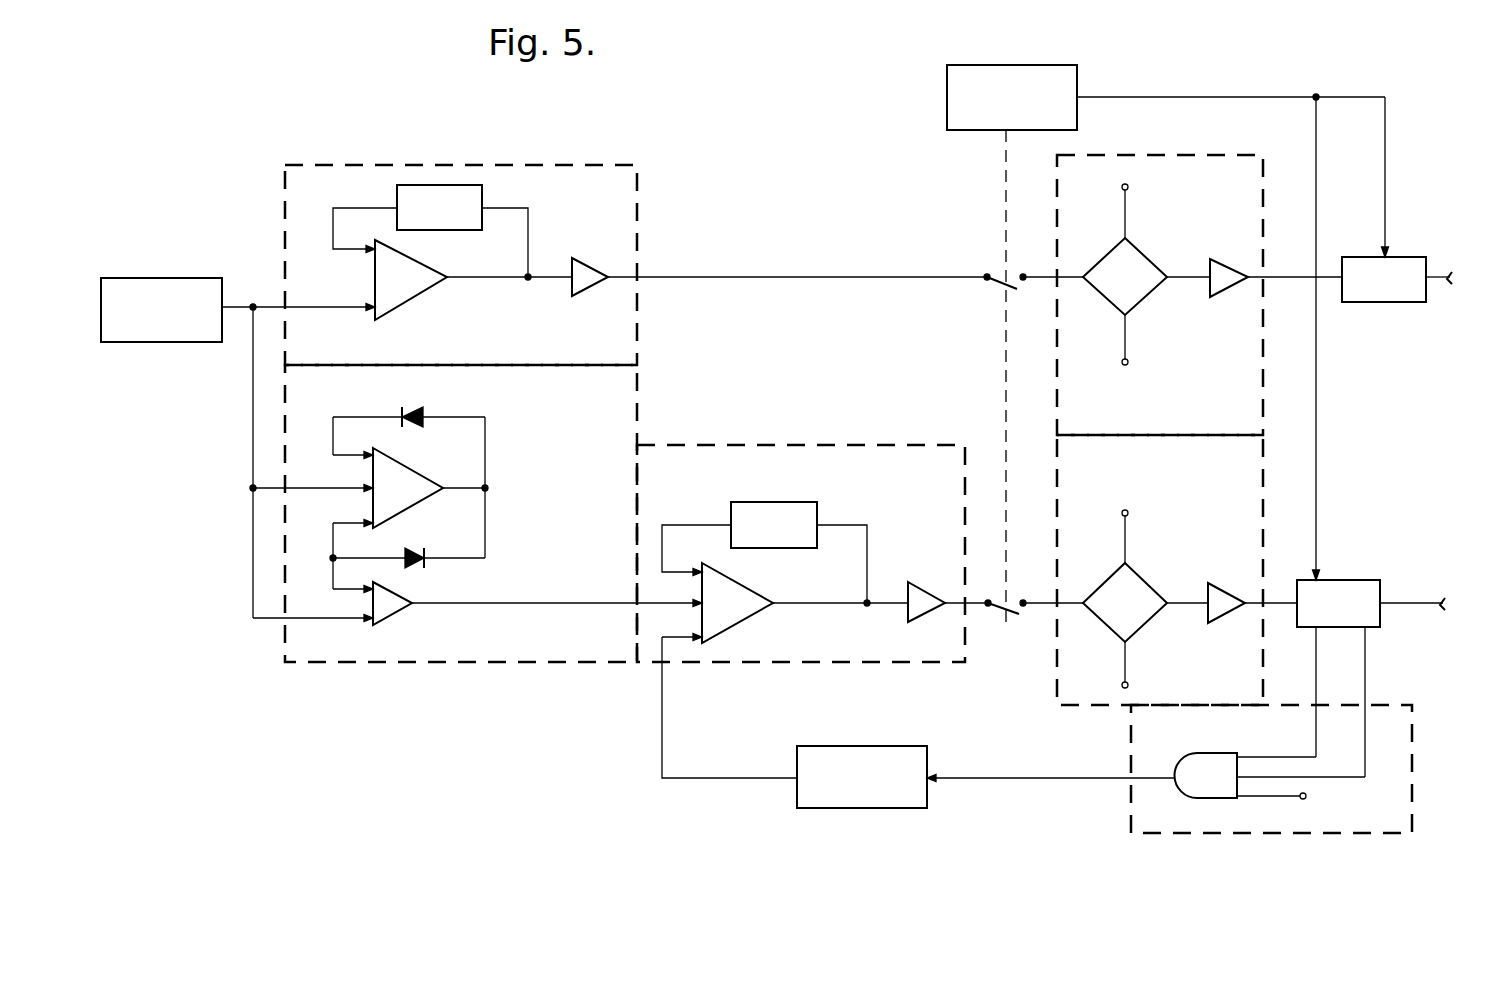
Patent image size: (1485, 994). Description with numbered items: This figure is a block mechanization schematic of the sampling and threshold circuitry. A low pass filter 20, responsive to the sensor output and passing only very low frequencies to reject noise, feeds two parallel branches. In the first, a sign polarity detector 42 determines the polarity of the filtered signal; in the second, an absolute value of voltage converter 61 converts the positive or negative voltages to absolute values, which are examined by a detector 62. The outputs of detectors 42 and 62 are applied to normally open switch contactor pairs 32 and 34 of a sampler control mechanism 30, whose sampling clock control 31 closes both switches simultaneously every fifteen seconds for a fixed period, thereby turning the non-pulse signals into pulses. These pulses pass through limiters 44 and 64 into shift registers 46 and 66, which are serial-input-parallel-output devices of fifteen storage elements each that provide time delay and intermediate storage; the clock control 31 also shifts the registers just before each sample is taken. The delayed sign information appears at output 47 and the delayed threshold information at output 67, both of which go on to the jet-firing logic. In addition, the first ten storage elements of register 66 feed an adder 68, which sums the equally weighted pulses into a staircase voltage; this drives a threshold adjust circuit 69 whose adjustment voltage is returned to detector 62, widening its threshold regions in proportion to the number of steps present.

The low pass filter 20 is at (105, 335).
The sampler control mechanism 30 is at (905, 106).
The sampling clock control 31 is at (1068, 70).
The switch contactor pair 32 is at (984, 260).
The threshold switch contacts 34 is at (1015, 631).
The sign polarity detector 42 is at (640, 165).
The limiter 44 is at (1188, 153).
The shift register 46 is at (1345, 302).
The register output 47 is at (1437, 274).
The absolute value of voltage converter 61 is at (285, 662).
The detector 62 is at (773, 445).
The limiter 64 is at (1052, 698).
The shift register 66 is at (1357, 587).
The register output 67 is at (1423, 607).
The adder 68 is at (1413, 705).
The threshold adjust circuit 69 is at (803, 805).